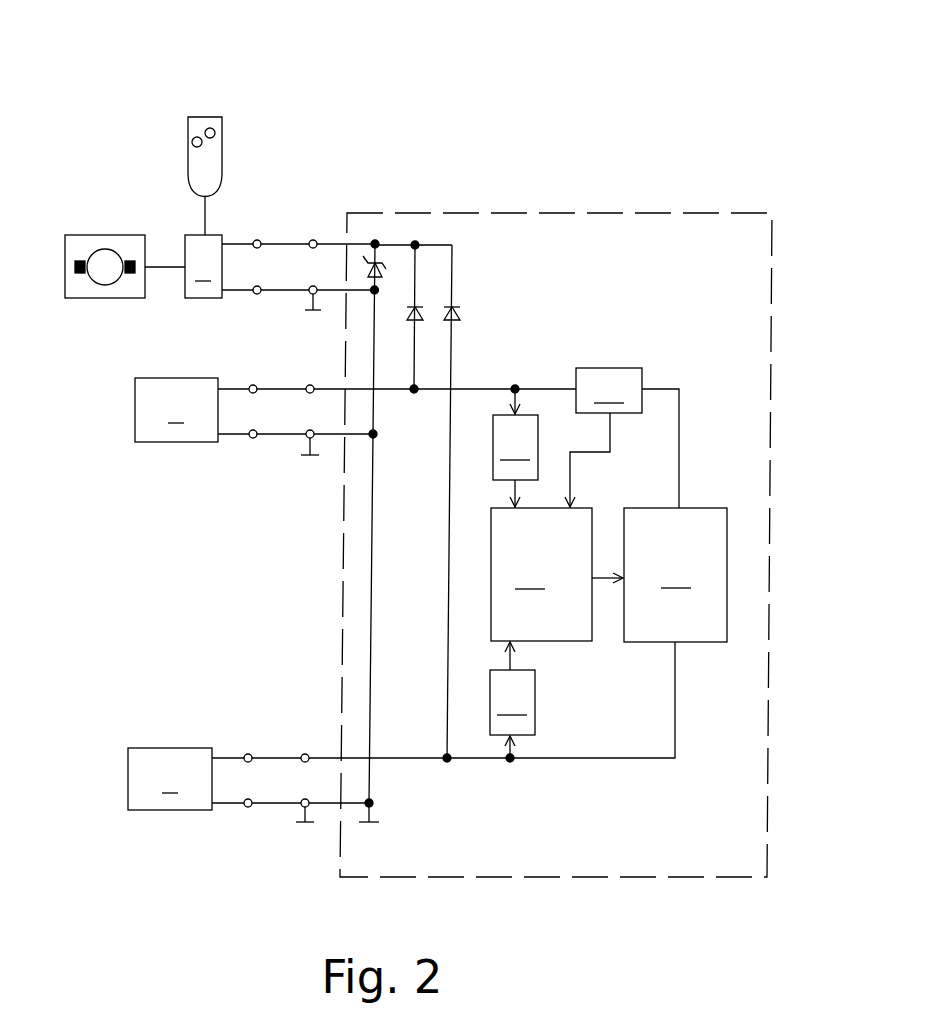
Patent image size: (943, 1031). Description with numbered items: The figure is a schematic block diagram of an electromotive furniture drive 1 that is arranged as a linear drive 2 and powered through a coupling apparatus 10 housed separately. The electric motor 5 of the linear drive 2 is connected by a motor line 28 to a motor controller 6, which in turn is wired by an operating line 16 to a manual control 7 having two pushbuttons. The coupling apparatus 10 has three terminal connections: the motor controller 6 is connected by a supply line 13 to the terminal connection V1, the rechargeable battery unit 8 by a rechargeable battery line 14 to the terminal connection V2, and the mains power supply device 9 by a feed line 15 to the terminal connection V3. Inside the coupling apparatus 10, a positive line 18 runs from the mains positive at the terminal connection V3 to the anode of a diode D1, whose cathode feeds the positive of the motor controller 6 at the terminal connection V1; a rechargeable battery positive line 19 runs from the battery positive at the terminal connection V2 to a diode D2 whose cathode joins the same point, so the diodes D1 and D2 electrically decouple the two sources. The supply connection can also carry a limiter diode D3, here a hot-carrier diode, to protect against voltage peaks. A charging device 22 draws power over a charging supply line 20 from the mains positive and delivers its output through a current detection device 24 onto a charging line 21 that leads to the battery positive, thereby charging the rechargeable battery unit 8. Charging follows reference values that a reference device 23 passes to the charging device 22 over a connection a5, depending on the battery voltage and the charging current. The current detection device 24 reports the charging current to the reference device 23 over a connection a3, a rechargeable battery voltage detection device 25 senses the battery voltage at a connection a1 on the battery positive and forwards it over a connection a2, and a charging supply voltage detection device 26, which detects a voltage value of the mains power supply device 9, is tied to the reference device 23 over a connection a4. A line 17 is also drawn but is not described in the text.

The electromotive furniture drive 1 is at (348, 118).
The linear drive 2 is at (70, 234).
The electric motor 5 is at (104, 249).
The motor controller 6 is at (203, 266).
The manual control 7 is at (222, 138).
The rechargeable battery unit 8 is at (176, 410).
The mains power supply device 9 is at (170, 779).
The coupling apparatus 10 is at (585, 212).
The supply line 13 is at (288, 227).
The rechargeable battery line 14 is at (277, 443).
The feed line 15 is at (270, 753).
The operating line 16 is at (207, 212).
The ground line 17 is at (371, 568).
The positive line 18 is at (448, 642).
The rechargeable battery positive line 19 is at (414, 363).
The charging supply line 20 is at (605, 760).
The charging line 21 is at (548, 386).
The charging device 22 is at (675, 575).
The reference device 23 is at (557, 574).
The current detection device 24 is at (624, 438).
The rechargeable battery voltage detection device 25 is at (515, 450).
The charging supply voltage detection device 26 is at (512, 700).
The motor line 28 is at (172, 270).
The diode D1 is at (458, 312).
The diode D2 is at (418, 309).
The limiter diode D3 is at (380, 262).
The terminal connection V1 is at (311, 267).
The terminal connection V2 is at (307, 411).
The terminal connection V3 is at (301, 779).
The connection a1 is at (514, 368).
The connection a2 is at (517, 528).
The connection a3 is at (567, 528).
The connection a4 is at (512, 628).
The connection a5 is at (574, 576).